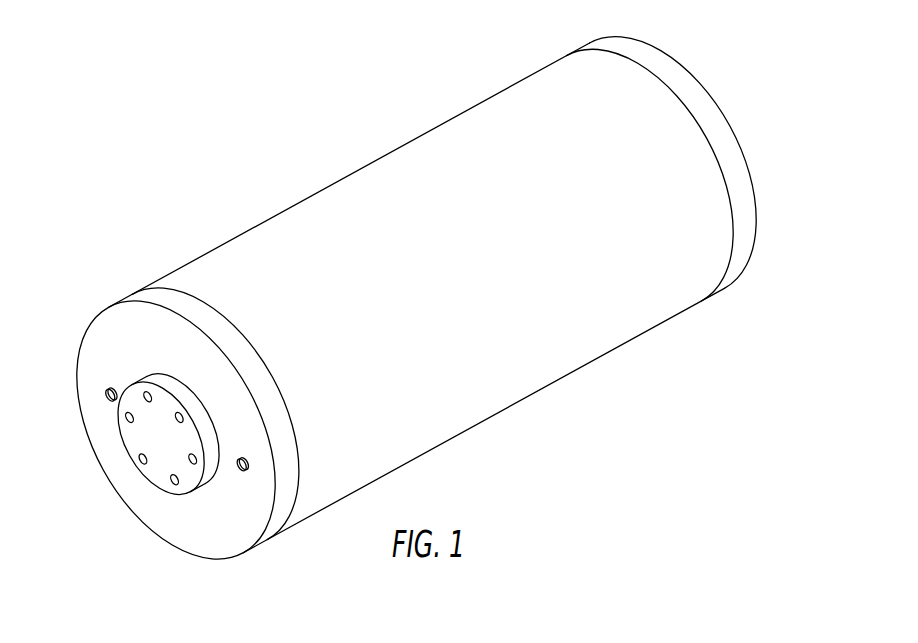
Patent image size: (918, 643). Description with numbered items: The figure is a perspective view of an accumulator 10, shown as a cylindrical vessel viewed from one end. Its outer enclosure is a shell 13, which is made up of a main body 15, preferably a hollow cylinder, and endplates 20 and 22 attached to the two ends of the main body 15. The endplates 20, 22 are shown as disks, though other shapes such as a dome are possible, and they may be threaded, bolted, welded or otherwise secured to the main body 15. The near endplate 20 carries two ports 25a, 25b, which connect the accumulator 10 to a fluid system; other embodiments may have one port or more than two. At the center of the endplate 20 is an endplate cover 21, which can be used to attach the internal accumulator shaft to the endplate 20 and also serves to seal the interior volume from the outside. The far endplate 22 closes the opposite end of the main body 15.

The accumulator 10 is at (191, 170).
The shell 13 is at (337, 158).
The main body 15 is at (478, 423).
The endplate 20 is at (128, 300).
The endplate cover 21 is at (143, 468).
The endplate 22 is at (730, 283).
The port 25a is at (108, 400).
The port 25b is at (238, 471).